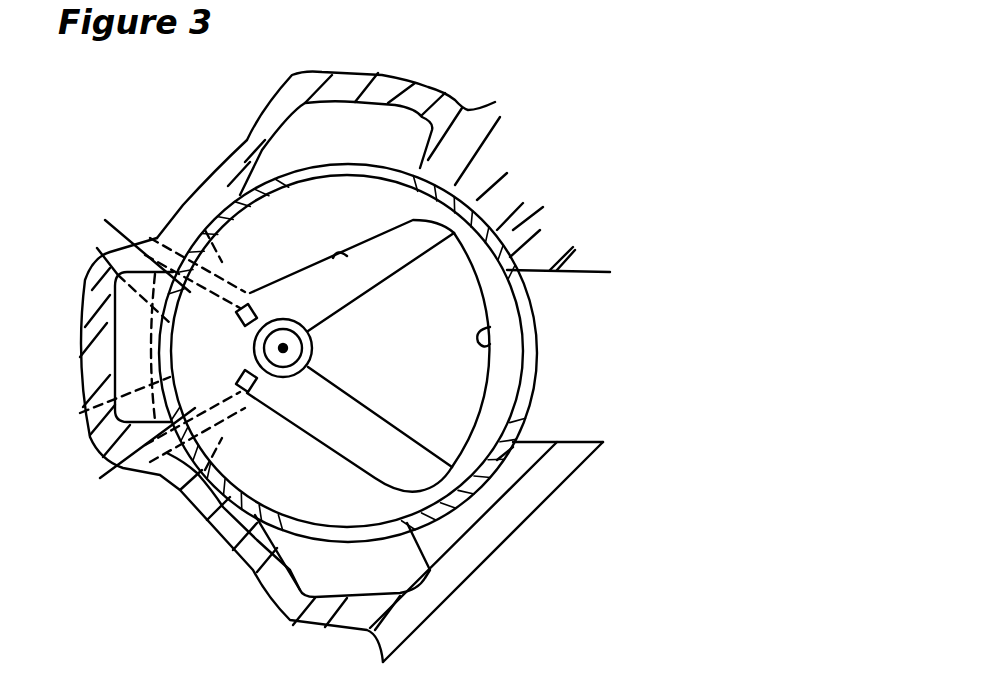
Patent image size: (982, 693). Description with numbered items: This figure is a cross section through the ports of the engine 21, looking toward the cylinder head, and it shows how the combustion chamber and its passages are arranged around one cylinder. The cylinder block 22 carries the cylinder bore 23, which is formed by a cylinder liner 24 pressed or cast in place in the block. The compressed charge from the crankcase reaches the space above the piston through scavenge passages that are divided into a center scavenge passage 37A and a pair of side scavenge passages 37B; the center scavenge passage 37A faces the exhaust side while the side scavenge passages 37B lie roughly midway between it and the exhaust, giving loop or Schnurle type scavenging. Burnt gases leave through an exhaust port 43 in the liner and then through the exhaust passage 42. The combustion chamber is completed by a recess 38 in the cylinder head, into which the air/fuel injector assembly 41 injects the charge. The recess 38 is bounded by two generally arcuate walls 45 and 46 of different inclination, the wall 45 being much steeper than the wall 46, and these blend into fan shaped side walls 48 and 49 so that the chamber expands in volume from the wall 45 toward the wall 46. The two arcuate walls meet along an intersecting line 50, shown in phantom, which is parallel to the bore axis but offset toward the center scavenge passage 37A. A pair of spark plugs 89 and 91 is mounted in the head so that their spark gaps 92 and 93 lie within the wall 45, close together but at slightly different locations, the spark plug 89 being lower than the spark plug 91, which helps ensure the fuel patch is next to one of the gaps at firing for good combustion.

The engine 21 is at (486, 58).
The cylinder block 22 is at (470, 147).
The cylinder bore 23 is at (526, 221).
The cylinder liner 24 is at (466, 205).
The center scavenge passage 37A is at (146, 359).
The side scavenge passages 37B is at (372, 152).
The recess 38 is at (433, 382).
The air/fuel injector assembly 41 is at (291, 318).
The exhaust passage 42 is at (583, 273).
The exhaust port 43 is at (520, 430).
The wall 45 is at (235, 352).
The wall 46 is at (490, 327).
The side wall 48 is at (333, 258).
The side wall 49 is at (354, 452).
The intersecting line 50 is at (279, 378).
The spark plug 89 is at (197, 480).
The spark plug 91 is at (173, 220).
The spark gap 92 is at (284, 392).
The spark gap 93 is at (275, 322).